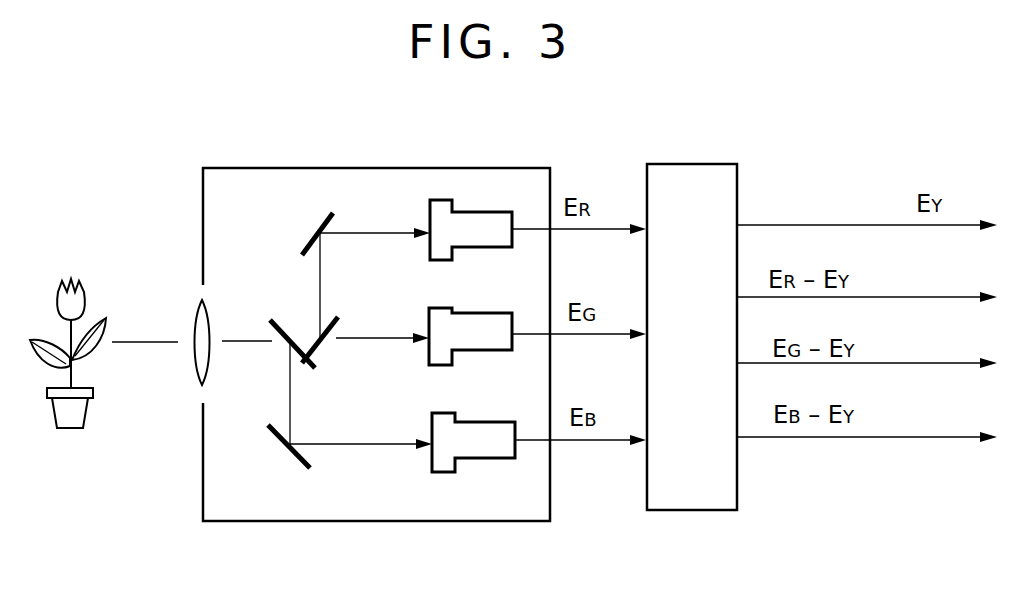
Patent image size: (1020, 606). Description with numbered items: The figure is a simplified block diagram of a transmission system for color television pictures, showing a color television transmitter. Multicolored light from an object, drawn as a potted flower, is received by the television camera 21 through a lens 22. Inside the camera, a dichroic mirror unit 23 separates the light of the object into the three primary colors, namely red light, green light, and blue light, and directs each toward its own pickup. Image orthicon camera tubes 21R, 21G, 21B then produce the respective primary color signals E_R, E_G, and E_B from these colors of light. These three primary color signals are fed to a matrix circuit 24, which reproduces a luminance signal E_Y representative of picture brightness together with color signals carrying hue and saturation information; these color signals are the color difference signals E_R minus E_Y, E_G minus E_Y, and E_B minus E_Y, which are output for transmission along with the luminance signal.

The television camera 21 is at (277, 522).
The lens 22 is at (195, 322).
The dichroic mirror unit 23 is at (288, 332).
The image orthicon camera tube 21R is at (483, 249).
The image orthicon camera tube 21G is at (480, 352).
The image orthicon camera tube 21B is at (483, 460).
The matrix circuit 24 is at (740, 477).